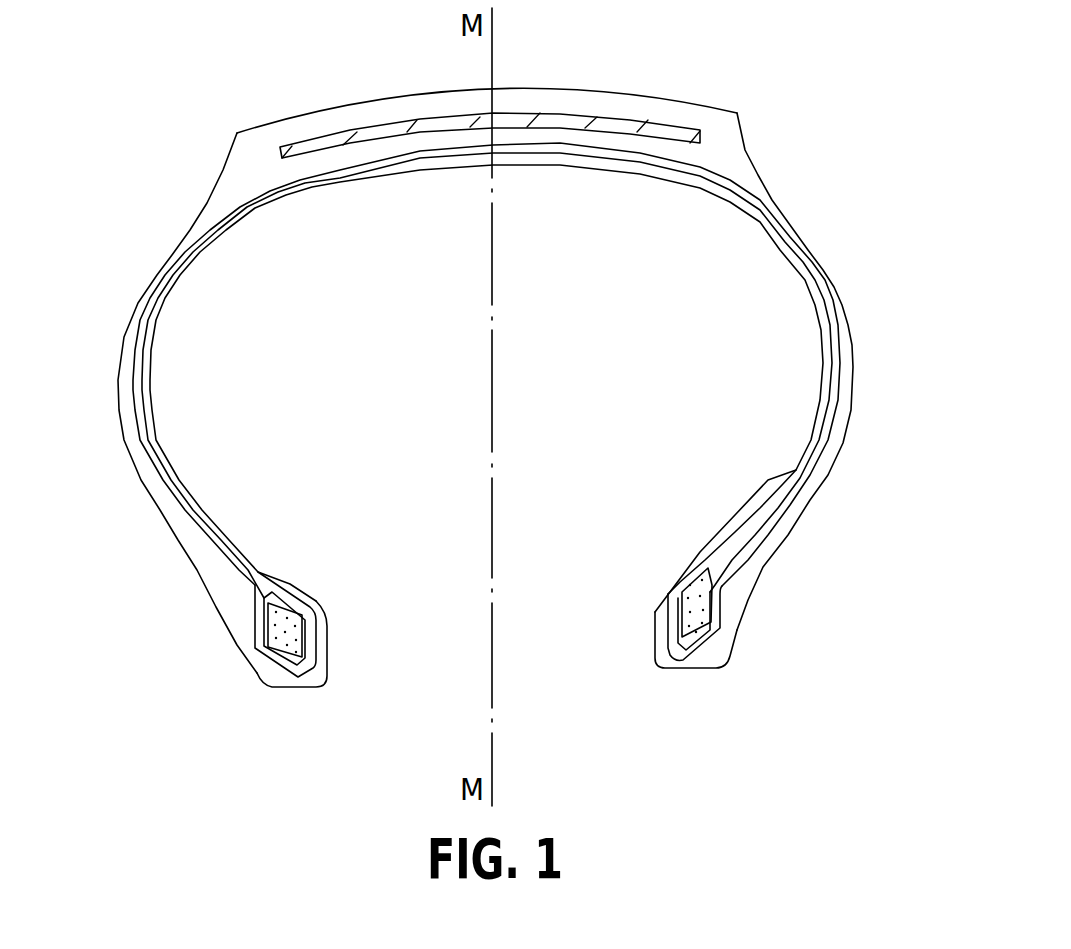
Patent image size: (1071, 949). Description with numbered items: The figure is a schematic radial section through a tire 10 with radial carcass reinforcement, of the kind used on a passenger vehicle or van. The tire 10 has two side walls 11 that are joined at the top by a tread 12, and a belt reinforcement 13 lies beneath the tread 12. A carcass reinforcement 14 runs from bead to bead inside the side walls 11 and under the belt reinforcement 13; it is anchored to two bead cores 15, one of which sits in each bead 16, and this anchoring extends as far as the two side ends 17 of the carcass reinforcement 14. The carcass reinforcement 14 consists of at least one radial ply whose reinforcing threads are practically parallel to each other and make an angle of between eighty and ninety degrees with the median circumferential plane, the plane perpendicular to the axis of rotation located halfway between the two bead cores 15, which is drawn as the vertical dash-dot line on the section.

The tire 10 is at (838, 198).
The side walls 11 is at (117, 388).
The tread 12 is at (695, 104).
The belt reinforcement 13 is at (307, 142).
The carcass reinforcement 14 is at (190, 510).
The bead cores 15 is at (297, 597).
The bead 16 is at (328, 648).
The side ends 17 is at (238, 571).